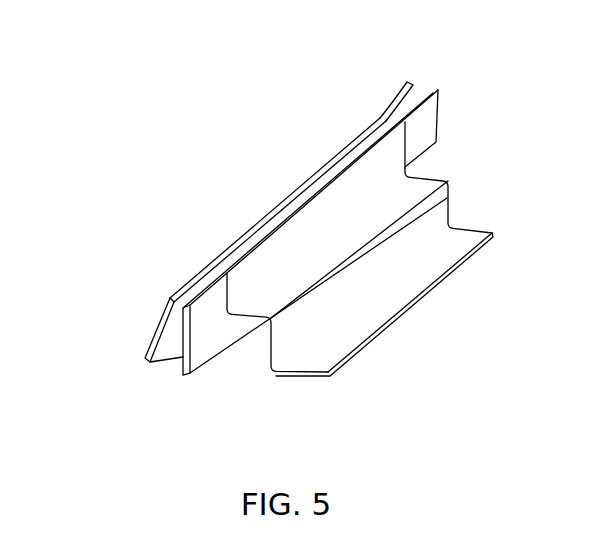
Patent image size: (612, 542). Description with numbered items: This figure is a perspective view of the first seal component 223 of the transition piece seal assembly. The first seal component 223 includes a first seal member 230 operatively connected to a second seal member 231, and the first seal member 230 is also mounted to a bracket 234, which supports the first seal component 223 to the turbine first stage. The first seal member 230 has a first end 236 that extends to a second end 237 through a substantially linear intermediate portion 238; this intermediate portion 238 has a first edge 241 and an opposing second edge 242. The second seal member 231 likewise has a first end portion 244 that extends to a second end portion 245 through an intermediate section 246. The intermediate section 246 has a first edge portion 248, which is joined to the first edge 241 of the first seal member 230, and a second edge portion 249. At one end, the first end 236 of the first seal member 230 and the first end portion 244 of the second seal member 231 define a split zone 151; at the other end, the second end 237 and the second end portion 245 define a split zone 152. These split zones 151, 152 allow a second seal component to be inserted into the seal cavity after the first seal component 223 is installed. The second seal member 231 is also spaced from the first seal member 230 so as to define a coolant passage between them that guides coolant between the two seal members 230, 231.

The split zone 151 is at (153, 386).
The split zone 152 is at (434, 78).
The first seal component 223 is at (125, 286).
The first seal member 230 is at (300, 382).
The second seal member 231 is at (122, 346).
The bracket 234 is at (393, 272).
The first end 236 is at (197, 350).
The second end 237 is at (448, 120).
The intermediate portion 238 is at (252, 354).
The first edge 241 is at (360, 145).
The second edge 242 is at (220, 328).
The first end portion 244 is at (156, 329).
The second end portion 245 is at (410, 80).
The intermediate section 246 is at (227, 252).
The first edge portion 248 is at (288, 205).
The second edge portion 249 is at (167, 363).